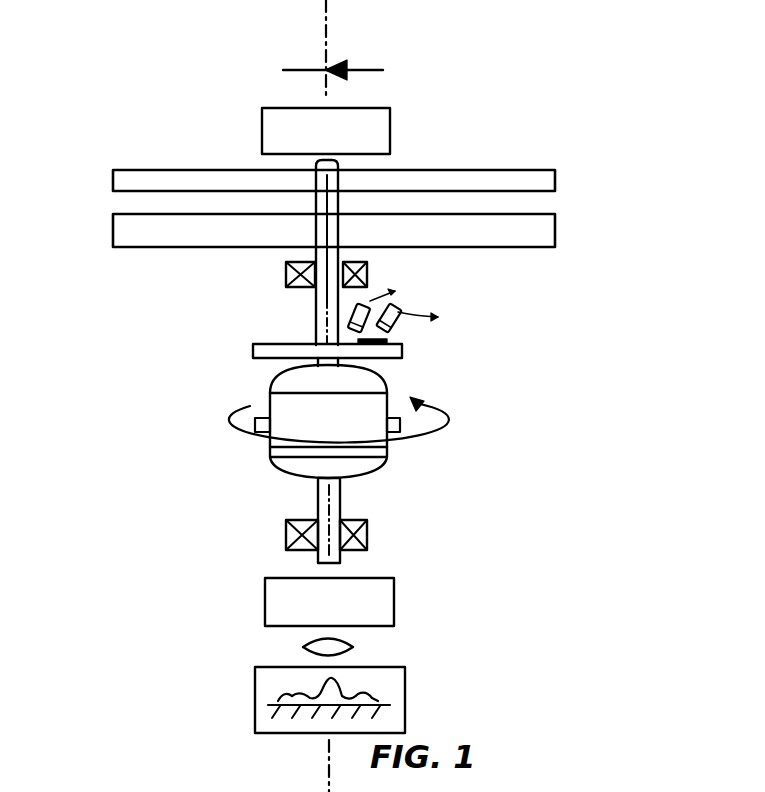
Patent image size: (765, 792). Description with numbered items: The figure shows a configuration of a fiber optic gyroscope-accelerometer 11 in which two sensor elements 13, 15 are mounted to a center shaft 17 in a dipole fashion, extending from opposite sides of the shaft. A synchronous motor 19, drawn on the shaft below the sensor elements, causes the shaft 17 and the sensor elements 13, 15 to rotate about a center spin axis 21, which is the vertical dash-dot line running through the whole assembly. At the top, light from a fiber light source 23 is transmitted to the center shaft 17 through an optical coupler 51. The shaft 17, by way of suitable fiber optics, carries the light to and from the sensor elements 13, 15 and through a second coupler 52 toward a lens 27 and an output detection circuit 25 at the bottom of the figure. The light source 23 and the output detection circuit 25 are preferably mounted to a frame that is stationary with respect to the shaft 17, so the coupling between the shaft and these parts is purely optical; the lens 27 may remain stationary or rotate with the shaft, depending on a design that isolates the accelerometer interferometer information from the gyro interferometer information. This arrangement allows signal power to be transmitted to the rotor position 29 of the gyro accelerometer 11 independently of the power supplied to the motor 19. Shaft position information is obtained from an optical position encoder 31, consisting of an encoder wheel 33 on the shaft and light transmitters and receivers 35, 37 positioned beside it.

The fiber optic gyroscope-accelerometer 11 is at (511, 452).
The sensor element 13 is at (113, 178).
The sensor element 15 is at (113, 226).
The center shaft 17 is at (315, 300).
The synchronous motor 19 is at (270, 449).
The center spin axis 21 is at (326, 14).
The fiber light source 23 is at (346, 64).
The output detection circuit 25 is at (406, 690).
The lens 27 is at (353, 647).
The rotor position 29 is at (345, 501).
The optical position encoder 31 is at (404, 330).
The encoder wheel 33 is at (403, 350).
The light transmitter and receiver 35 is at (362, 305).
The light transmitter and receiver 37 is at (399, 306).
The optical coupler 51 is at (391, 134).
The coupler 52 is at (395, 606).